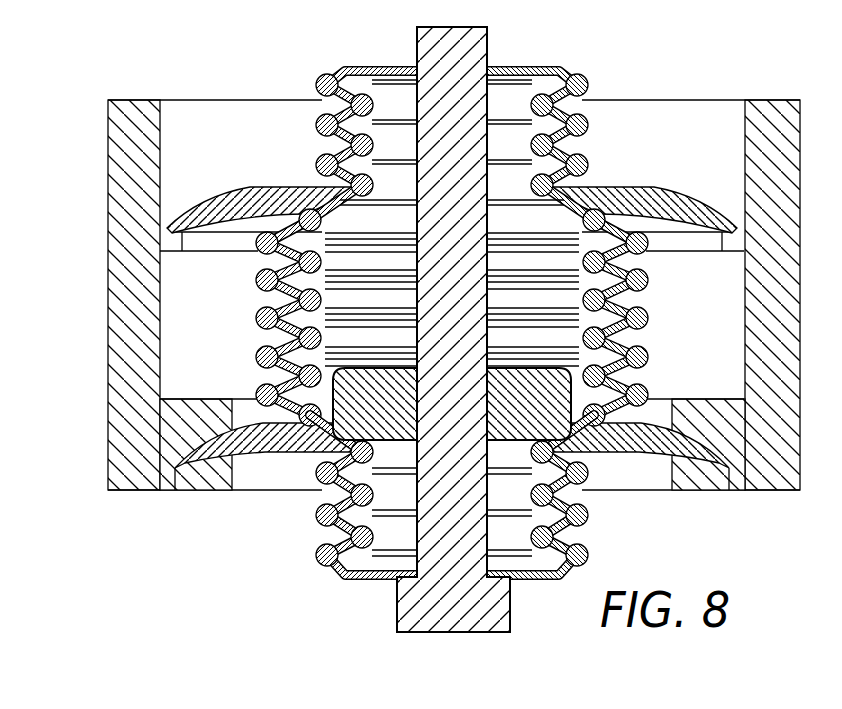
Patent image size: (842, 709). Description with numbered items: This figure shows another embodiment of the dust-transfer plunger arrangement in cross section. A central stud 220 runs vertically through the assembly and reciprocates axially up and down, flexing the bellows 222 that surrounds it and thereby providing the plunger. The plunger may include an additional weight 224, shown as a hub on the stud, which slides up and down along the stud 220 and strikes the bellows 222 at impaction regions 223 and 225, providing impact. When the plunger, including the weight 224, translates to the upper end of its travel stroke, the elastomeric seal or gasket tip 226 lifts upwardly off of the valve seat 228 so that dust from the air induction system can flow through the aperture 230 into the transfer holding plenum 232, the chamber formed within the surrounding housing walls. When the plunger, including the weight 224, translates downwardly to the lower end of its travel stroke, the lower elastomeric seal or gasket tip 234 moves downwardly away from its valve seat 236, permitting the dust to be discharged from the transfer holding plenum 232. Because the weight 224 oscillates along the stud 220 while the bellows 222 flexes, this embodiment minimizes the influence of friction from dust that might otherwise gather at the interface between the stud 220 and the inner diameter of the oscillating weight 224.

The central stud 220 is at (488, 46).
The bellows 222 is at (257, 358).
The impaction region 223 is at (300, 452).
The weight 224 is at (548, 428).
The impaction region 225 is at (320, 213).
The elastomeric seal or gasket tip 226 is at (208, 192).
The valve seat 228 is at (170, 240).
The aperture 230 is at (208, 243).
The transfer holding plenum 232 is at (172, 343).
The lower elastomeric seal or gasket tip 234 is at (205, 455).
The valve seat 236 is at (175, 428).